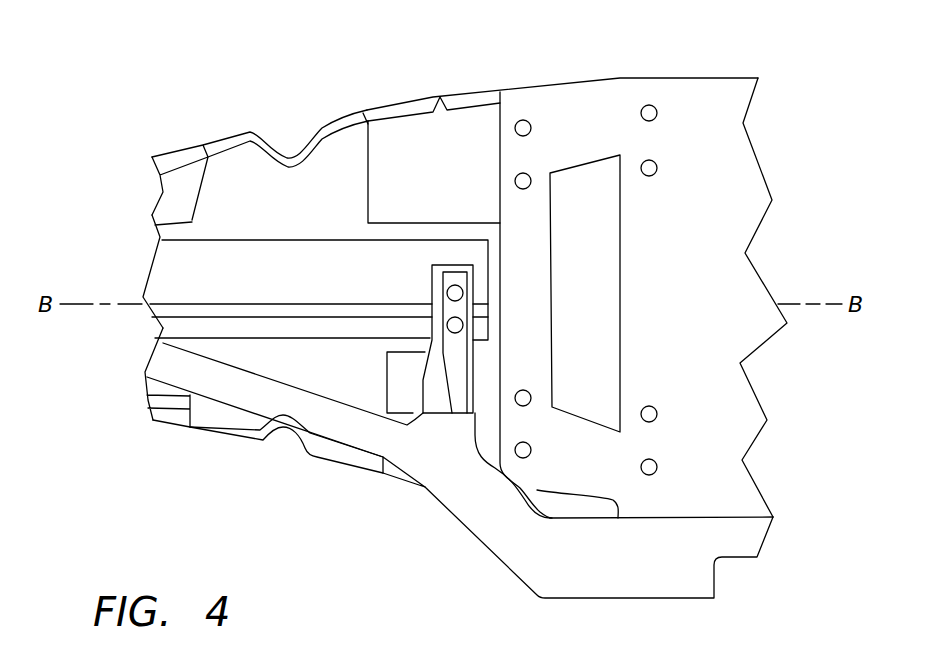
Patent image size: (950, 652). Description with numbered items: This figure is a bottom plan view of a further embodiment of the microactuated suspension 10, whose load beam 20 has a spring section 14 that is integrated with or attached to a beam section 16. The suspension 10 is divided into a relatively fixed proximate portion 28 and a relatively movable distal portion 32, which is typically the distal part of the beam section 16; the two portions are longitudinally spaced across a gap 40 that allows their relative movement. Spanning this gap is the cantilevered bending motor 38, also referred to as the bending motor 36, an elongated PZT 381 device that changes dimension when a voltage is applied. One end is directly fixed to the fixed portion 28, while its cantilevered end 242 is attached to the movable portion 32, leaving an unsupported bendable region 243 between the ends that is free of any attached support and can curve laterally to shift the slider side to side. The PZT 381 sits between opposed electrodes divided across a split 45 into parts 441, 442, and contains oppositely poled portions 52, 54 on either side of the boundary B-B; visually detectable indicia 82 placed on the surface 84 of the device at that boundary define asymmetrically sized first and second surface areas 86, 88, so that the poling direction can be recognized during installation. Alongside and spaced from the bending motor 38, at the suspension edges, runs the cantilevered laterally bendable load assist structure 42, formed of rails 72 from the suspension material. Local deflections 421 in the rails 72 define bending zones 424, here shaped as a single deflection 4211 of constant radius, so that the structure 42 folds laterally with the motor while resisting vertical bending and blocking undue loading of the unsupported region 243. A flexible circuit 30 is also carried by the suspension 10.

The suspension 10 is at (803, 252).
The spring section 14 is at (722, 132).
The beam section 16 is at (177, 215).
The load beam 20 is at (577, 70).
The relatively fixed portion 28 is at (448, 128).
The flexible circuit 30 is at (513, 542).
The relatively movable portion 32 is at (148, 173).
The bending motor 36 is at (247, 128).
The bending motor 38 is at (345, 218).
The gap 40 is at (326, 228).
The load assist structure 42 is at (305, 467).
The split 45 is at (163, 312).
The poled portion 52 is at (230, 243).
The poled portion 54 is at (293, 325).
The rails 72 is at (267, 123).
The visually detectable indicia 82 is at (160, 255).
The surface 84 is at (216, 288).
The first surface area 86 is at (452, 252).
The second surface area 88 is at (397, 330).
The cantilevered end 242 is at (482, 252).
The unsupported bendable region 243 is at (150, 372).
The PZT 381 is at (410, 240).
The local deflection 421 is at (290, 135).
The bending zone 424 is at (310, 110).
The electrode part 441 is at (422, 271).
The electrode part 442 is at (232, 287).
The single deflection of constant radius 4211 is at (283, 442).